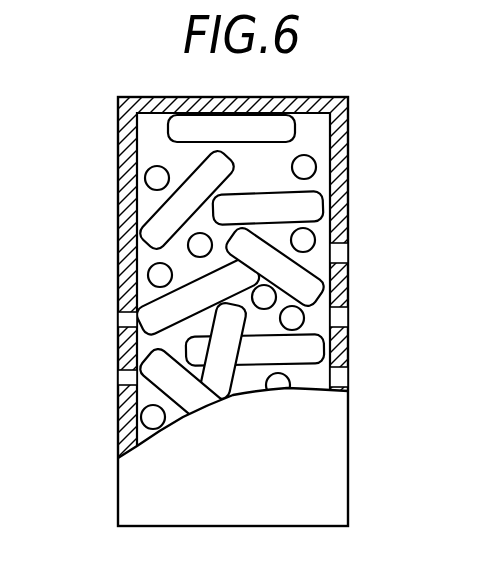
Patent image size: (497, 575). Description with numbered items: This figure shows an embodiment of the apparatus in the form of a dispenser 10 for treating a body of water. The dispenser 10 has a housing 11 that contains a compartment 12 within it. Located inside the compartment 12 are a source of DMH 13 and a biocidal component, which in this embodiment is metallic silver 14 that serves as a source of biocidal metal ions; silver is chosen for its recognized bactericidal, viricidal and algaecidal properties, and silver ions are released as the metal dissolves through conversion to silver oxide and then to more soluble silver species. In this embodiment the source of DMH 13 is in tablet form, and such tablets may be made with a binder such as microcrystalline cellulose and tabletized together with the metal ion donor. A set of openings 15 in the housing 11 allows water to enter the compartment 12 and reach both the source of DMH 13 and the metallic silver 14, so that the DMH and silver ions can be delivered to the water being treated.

The dispenser 10 is at (248, 283).
The housing 11 is at (318, 138).
The compartment 12 is at (234, 278).
The source of DMH 13 is at (313, 345).
The metallic silver 14 is at (188, 243).
The set of openings 15 is at (117, 323).